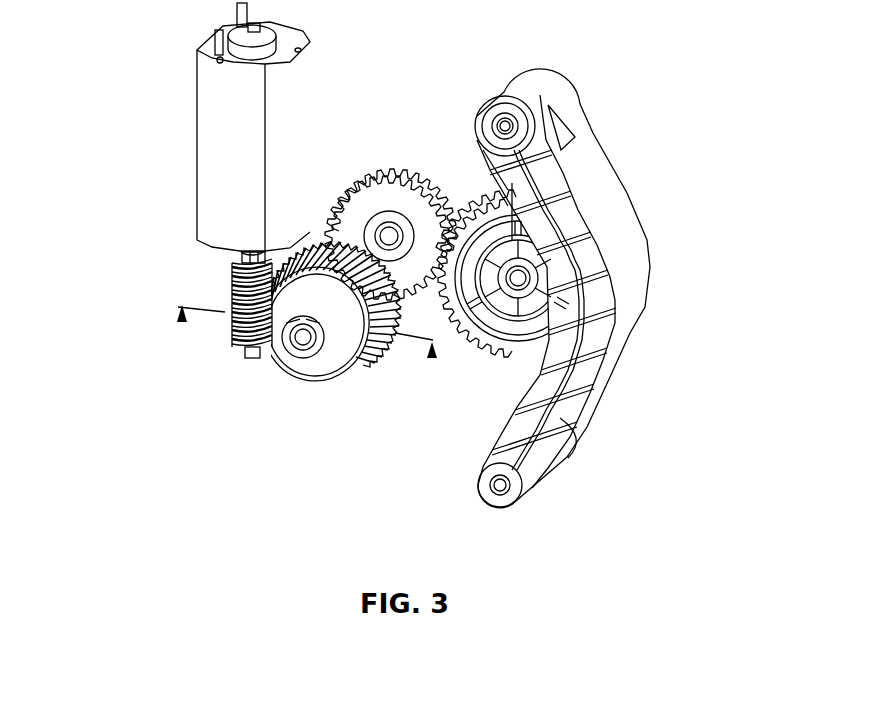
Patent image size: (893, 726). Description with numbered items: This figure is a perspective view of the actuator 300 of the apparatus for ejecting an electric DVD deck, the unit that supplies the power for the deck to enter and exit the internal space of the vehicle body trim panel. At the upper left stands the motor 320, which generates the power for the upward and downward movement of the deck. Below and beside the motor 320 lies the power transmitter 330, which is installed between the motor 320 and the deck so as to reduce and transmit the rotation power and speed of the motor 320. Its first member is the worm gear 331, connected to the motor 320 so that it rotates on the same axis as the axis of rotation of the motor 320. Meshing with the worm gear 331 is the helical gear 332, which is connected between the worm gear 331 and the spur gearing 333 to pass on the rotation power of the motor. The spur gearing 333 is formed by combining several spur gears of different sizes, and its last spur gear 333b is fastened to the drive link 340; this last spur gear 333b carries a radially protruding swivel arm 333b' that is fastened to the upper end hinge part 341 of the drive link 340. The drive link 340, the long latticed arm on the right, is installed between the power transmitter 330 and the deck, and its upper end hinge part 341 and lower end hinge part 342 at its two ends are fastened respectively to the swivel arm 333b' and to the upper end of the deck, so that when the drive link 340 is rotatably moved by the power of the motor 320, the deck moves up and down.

The actuator 300 is at (115, 29).
The motor 320 is at (203, 120).
The power transmitter 330 is at (407, 468).
The worm gear 331 is at (231, 347).
The helical gear 332 is at (347, 385).
The spur gearing 333 is at (408, 312).
The last spur gear 333b is at (484, 273).
The swivel arm 333b' is at (451, 173).
The drive link 340 is at (603, 373).
The upper end hinge part 341 is at (537, 90).
The lower end hinge part 342 is at (512, 493).